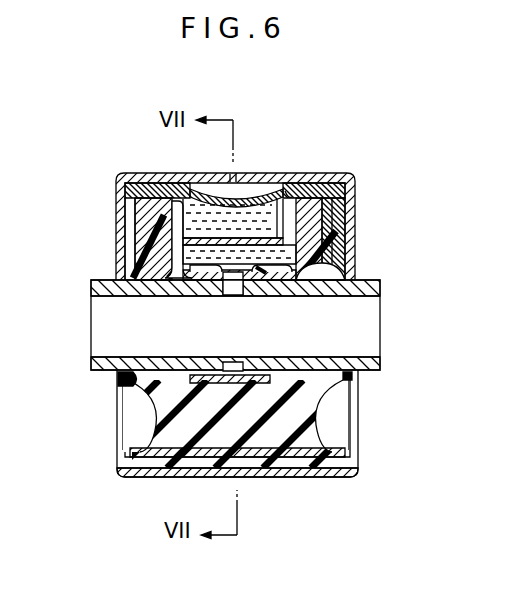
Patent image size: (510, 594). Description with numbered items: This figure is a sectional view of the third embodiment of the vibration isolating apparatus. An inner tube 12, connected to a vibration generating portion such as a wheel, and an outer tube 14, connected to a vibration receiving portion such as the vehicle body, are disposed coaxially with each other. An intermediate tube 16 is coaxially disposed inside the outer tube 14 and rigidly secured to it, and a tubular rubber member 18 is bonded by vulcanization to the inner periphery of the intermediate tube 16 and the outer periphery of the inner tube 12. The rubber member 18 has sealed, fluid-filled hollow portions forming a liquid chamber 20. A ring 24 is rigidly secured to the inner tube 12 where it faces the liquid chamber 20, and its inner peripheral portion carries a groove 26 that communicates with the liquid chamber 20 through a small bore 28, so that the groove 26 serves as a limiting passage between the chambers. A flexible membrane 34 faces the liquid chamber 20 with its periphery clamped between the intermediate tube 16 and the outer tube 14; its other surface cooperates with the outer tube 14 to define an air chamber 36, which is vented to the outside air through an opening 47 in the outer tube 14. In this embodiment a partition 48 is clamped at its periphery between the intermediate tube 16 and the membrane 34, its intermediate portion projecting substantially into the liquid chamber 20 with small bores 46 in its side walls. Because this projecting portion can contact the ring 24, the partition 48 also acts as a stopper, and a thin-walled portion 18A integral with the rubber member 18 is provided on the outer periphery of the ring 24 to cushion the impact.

The inner tube 12 is at (378, 286).
The outer tube 14 is at (319, 176).
The intermediate tube 16 is at (340, 222).
The tubular rubber member 18 is at (348, 276).
The thin-walled portion 18A is at (184, 258).
The liquid chamber 20 is at (328, 236).
The ring 24 is at (210, 268).
The groove 26 is at (233, 293).
The small bore 28 is at (262, 278).
The flexible membrane 34 is at (255, 190).
The air chamber 36 is at (218, 192).
The small bores 46 is at (186, 227).
The opening 47 is at (233, 178).
The partition 48 is at (288, 193).